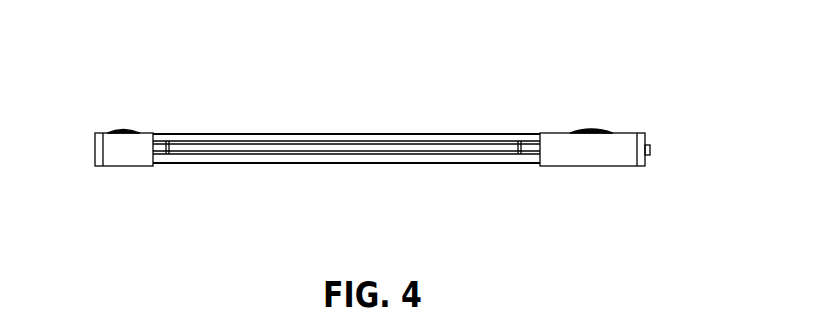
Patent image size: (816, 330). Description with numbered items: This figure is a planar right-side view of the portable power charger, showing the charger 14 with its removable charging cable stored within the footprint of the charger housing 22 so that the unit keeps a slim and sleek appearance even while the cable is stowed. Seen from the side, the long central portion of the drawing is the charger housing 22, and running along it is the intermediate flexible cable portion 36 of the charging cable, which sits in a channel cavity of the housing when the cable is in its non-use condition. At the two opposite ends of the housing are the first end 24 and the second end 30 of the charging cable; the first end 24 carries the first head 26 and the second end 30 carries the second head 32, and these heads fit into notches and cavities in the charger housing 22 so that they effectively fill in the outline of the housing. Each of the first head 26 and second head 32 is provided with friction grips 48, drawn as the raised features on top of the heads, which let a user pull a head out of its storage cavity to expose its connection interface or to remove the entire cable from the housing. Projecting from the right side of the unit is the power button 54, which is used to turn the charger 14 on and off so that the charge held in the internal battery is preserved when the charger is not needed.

The charger 14 is at (635, 62).
The charger housing 22 is at (283, 134).
The first end 24 is at (595, 173).
The first head 26 is at (570, 157).
The second end 30 is at (125, 173).
The second head 32 is at (113, 157).
The intermediate flexible cable portion 36 is at (331, 150).
The friction grips 48 is at (112, 122).
The power button 54 is at (657, 152).